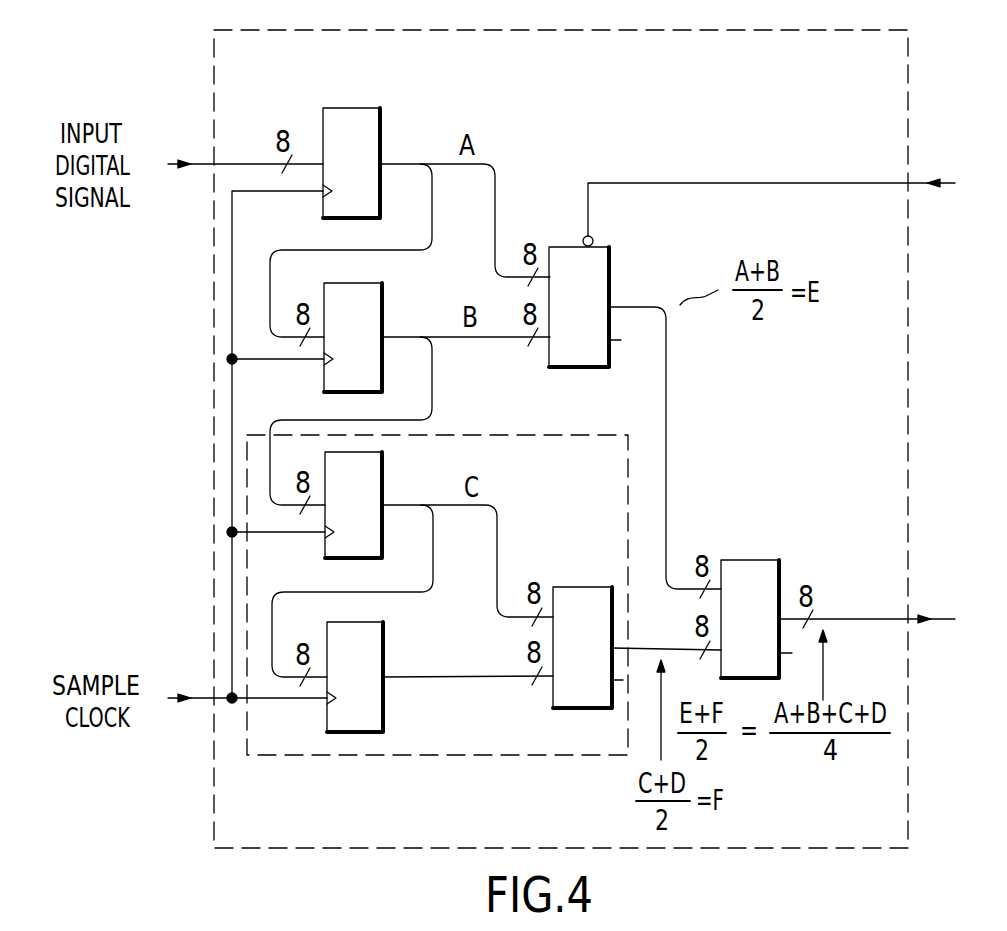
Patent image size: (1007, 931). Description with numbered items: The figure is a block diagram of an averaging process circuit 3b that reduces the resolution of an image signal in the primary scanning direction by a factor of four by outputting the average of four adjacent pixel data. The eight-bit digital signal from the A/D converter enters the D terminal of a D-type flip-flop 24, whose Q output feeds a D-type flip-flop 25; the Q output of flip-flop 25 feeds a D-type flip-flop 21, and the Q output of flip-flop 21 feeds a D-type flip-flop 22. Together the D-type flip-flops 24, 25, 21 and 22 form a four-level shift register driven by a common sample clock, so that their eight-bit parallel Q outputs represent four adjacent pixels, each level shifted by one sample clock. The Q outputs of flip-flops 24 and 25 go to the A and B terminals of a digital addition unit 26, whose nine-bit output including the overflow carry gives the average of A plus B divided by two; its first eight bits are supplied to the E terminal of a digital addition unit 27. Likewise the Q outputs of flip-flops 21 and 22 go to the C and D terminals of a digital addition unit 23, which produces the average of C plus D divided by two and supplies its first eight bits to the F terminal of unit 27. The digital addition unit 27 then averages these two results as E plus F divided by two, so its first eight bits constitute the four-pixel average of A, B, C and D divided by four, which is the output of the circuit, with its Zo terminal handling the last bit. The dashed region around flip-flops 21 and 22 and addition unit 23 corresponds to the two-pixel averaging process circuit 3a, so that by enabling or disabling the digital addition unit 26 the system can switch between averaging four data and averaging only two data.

The D-type flip-flop 21 is at (384, 460).
The D-type flip-flop 22 is at (385, 647).
The digital addition unit 23 is at (566, 585).
The D-type flip-flop 24 is at (382, 117).
The D-type flip-flop 25 is at (384, 307).
The digital addition unit 26 is at (611, 270).
The digital addition unit 27 is at (781, 567).
The averaging process circuit 3a is at (545, 432).
The averaging process circuit 3b is at (912, 70).